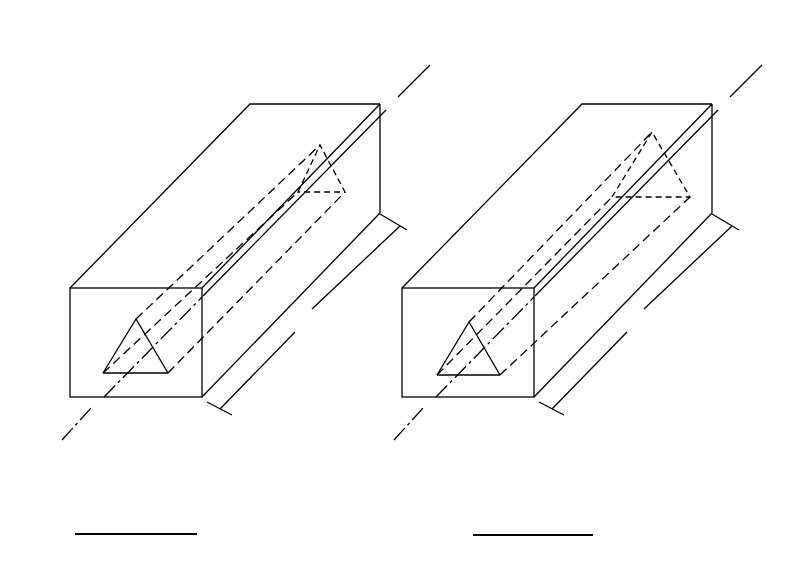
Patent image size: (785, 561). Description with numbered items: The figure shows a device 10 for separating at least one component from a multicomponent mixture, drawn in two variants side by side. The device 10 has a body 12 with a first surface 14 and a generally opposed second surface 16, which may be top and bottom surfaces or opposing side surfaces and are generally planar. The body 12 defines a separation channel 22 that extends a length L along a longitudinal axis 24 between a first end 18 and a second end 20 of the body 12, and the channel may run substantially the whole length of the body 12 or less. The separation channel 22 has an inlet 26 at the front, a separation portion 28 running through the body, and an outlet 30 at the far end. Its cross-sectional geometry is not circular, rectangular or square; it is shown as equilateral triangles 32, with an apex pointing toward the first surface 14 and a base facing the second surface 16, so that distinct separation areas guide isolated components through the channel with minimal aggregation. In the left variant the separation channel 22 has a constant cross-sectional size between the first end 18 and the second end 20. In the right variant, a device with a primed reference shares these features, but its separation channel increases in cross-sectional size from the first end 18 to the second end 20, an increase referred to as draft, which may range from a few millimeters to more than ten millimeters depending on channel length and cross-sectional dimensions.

In FIG. 1A, the device 10 is at (143, 106).
In FIG. 1B, the device 10 is at (519, 117).
In FIG. 1A, the body 12 is at (201, 180).
In FIG. 1B, the body 12 is at (567, 140).
In FIG. 1A, the first surface 14 is at (110, 262).
In FIG. 1B, the first surface 14 is at (512, 170).
In FIG. 1A, the second surface 16 is at (74, 400).
In FIG. 1B, the second surface 16 is at (406, 400).
In FIG. 1A, the first end 18 is at (92, 323).
In FIG. 1B, the first end 18 is at (424, 323).
In FIG. 1A, the second end 20 is at (268, 101).
In FIG. 1B, the second end 20 is at (617, 102).
In FIG. 1A, the separation channel 22 is at (266, 194).
In FIG. 1B, the separation channel 22 is at (602, 184).
In FIG. 1A, the longitudinal axis 24 is at (397, 94).
In FIG. 1B, the longitudinal axis 24 is at (725, 100).
In FIG. 1A, the inlet 26 is at (147, 368).
In FIG. 1B, the inlet 26 is at (479, 369).
In FIG. 1A, the separation portion 28 is at (221, 232).
In FIG. 1B, the separation portion 28 is at (552, 231).
In FIG. 1A, the outlet 30 is at (326, 141).
In FIG. 1B, the outlet 30 is at (662, 147).
In FIG. 1A, the equilateral triangles 32 is at (161, 376).
In FIG. 1B, the equilateral triangles 32 is at (492, 378).